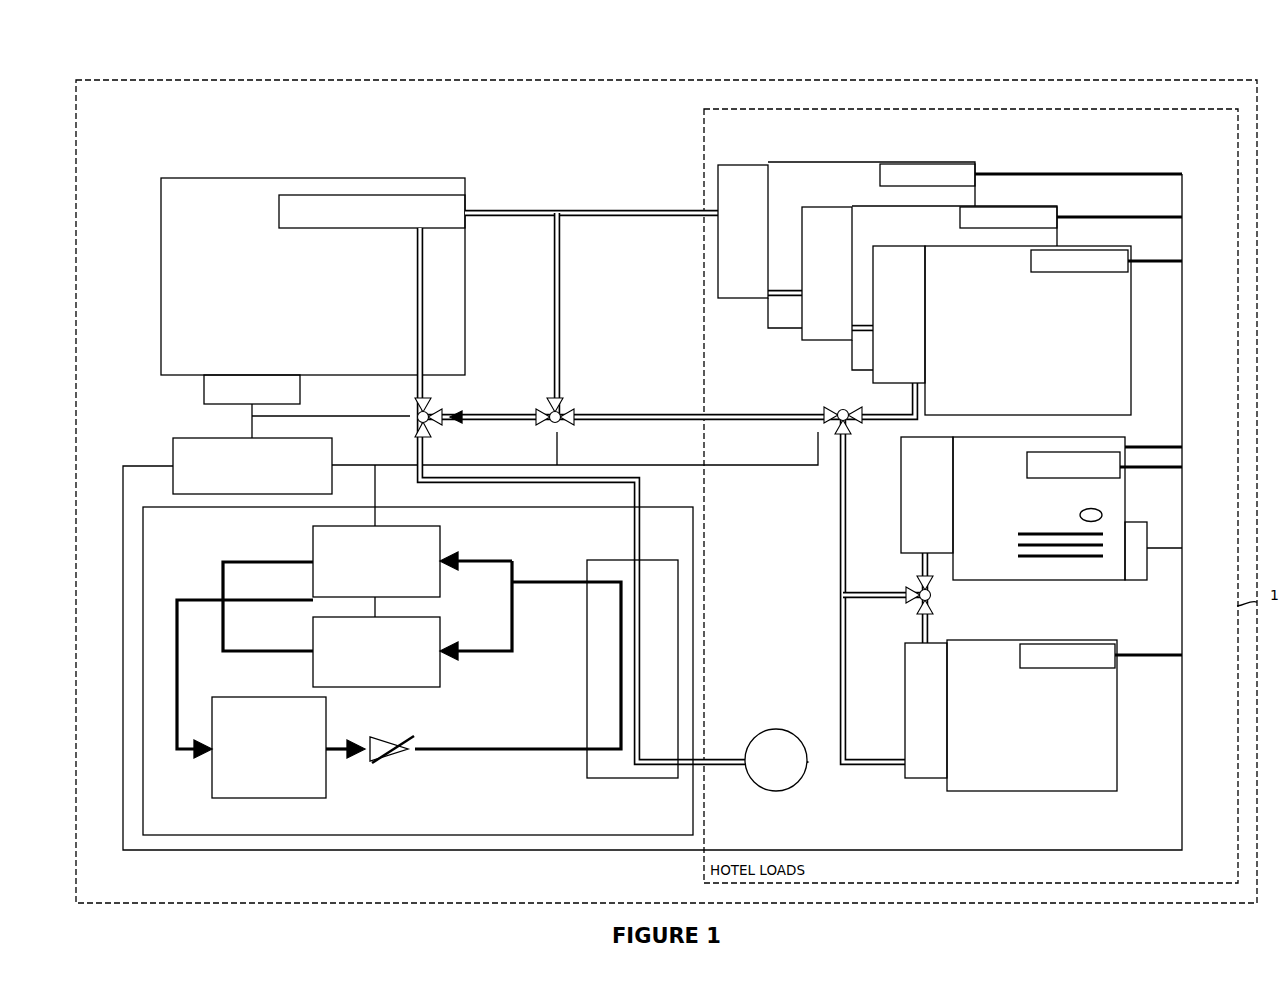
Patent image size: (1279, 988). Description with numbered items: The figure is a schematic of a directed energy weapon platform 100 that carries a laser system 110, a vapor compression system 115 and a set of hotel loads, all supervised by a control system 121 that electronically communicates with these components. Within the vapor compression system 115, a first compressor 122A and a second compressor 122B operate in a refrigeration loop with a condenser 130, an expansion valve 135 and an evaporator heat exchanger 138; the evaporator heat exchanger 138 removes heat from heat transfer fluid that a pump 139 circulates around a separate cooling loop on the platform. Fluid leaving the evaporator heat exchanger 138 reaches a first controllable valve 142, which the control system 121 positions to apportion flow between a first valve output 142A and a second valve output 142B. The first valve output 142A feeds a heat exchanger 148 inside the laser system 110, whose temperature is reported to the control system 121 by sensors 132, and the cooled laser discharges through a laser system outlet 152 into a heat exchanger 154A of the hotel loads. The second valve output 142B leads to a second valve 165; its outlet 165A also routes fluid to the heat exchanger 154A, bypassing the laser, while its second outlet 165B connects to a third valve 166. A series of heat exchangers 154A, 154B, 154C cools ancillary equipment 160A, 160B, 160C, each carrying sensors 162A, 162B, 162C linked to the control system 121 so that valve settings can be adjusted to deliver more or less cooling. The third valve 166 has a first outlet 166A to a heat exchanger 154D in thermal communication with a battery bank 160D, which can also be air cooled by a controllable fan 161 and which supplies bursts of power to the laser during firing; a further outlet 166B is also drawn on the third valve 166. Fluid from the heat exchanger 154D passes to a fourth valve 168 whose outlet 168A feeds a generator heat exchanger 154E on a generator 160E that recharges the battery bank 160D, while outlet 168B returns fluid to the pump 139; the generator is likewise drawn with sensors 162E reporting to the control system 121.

The directed energy weapon platform 100 is at (228, 80).
The laser system 110 is at (195, 184).
The vapor compression system 115 is at (483, 826).
The control system 121 is at (174, 452).
The first compressor 122A is at (435, 540).
The second compressor 122B is at (435, 675).
The condenser 130 is at (312, 722).
The sensors 132 is at (205, 390).
The expansion valve 135 is at (410, 758).
The evaporator heat exchanger 138 is at (620, 780).
The pump 139 is at (780, 782).
The first controllable valve 142 is at (414, 410).
The first valve output 142A is at (436, 413).
The second valve output 142B is at (436, 424).
The heat exchanger 148 is at (304, 198).
The laser system outlet 152 is at (465, 213).
The heat exchanger 154A is at (725, 172).
The heat exchanger 154B is at (801, 336).
The heat exchanger 154C is at (872, 378).
The heat exchanger 154D is at (904, 548).
The generator heat exchanger 154E is at (928, 780).
The ancillary equipment 160A is at (804, 172).
The ancillary equipment 160B is at (955, 210).
The ancillary equipment 160C is at (1110, 305).
The battery bank 160D is at (1100, 448).
The generator 160E is at (1092, 762).
The controllable fan 161 is at (1145, 536).
The sensors 162A is at (884, 165).
The sensors 162B is at (1040, 210).
The sensors 162C is at (1130, 258).
The sensors 162E is at (1080, 645).
The second valve 165 is at (553, 412).
The outlet 165A is at (558, 400).
The second outlet 165B is at (570, 410).
The third valve 166 is at (834, 419).
The first outlet 166A is at (856, 425).
The valve port 166B is at (836, 430).
The fourth valve 168 is at (930, 600).
The outlet 168A is at (920, 612).
The outlet 168B is at (908, 601).